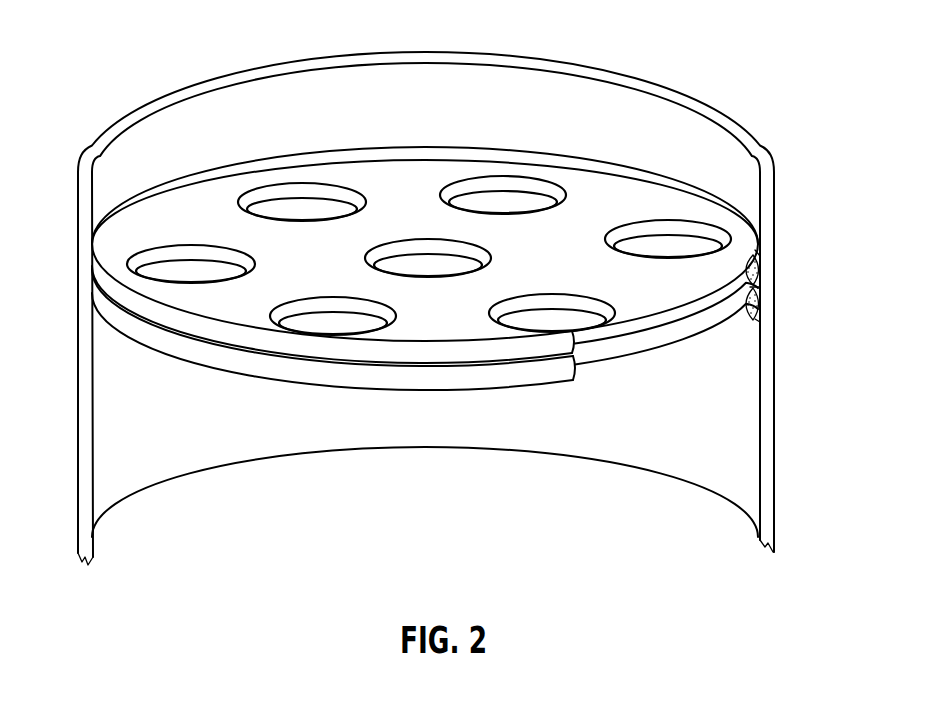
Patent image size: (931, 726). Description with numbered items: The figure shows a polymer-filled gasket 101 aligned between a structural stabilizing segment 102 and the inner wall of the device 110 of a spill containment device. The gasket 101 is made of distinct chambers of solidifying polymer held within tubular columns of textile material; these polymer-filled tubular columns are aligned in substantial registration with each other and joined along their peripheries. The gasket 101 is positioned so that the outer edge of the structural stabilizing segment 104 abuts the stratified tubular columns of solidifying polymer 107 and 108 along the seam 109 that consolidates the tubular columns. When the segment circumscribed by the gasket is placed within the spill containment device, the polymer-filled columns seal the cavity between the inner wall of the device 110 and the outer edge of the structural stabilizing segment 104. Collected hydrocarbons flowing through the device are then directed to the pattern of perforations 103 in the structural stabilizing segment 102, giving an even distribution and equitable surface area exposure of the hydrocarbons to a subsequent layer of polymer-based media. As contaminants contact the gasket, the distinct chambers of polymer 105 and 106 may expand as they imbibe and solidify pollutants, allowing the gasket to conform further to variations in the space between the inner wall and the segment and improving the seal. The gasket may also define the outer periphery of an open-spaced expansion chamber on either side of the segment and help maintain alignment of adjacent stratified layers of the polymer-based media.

The gasket 101 is at (283, 368).
The structural stabilizing segment 102 is at (345, 253).
The pattern of perforations 103 is at (608, 308).
The outer edge of the structural stabilizing segment 104 is at (678, 332).
The chamber of polymer 105 is at (759, 272).
The chamber of polymer 106 is at (759, 308).
The tubular column of solidifying polymer 107 is at (759, 254).
The tubular column of solidifying polymer 108 is at (758, 321).
The seam 109 is at (755, 287).
The inner wall of the device 110 is at (668, 463).